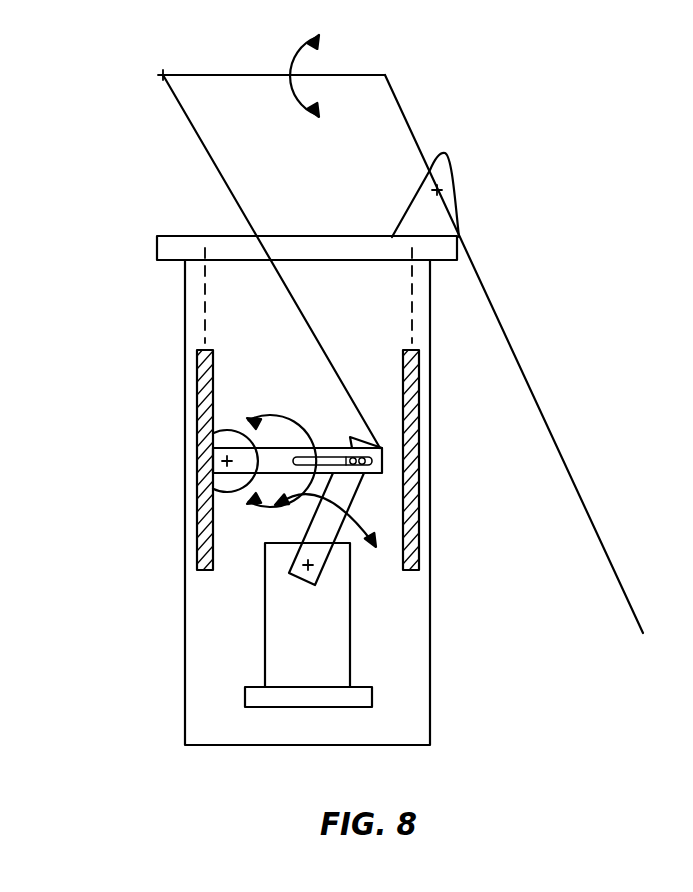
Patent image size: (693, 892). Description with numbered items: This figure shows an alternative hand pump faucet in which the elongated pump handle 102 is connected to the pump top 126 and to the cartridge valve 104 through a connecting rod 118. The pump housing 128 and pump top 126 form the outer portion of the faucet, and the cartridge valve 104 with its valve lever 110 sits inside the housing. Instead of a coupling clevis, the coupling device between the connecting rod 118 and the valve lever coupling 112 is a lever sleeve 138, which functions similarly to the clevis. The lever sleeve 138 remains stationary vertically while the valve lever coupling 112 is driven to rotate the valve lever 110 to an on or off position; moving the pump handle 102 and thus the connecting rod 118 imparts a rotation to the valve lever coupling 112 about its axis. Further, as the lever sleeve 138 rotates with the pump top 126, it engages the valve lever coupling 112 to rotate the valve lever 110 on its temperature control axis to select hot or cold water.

The pump handle 102 is at (563, 462).
The cartridge valve 104 is at (338, 628).
The valve lever 110 is at (345, 492).
The valve lever coupling 112 is at (297, 448).
The connecting rod 118 is at (205, 147).
The pump top 126 is at (183, 236).
The pump housing 128 is at (185, 625).
The lever sleeve 138 is at (205, 397).